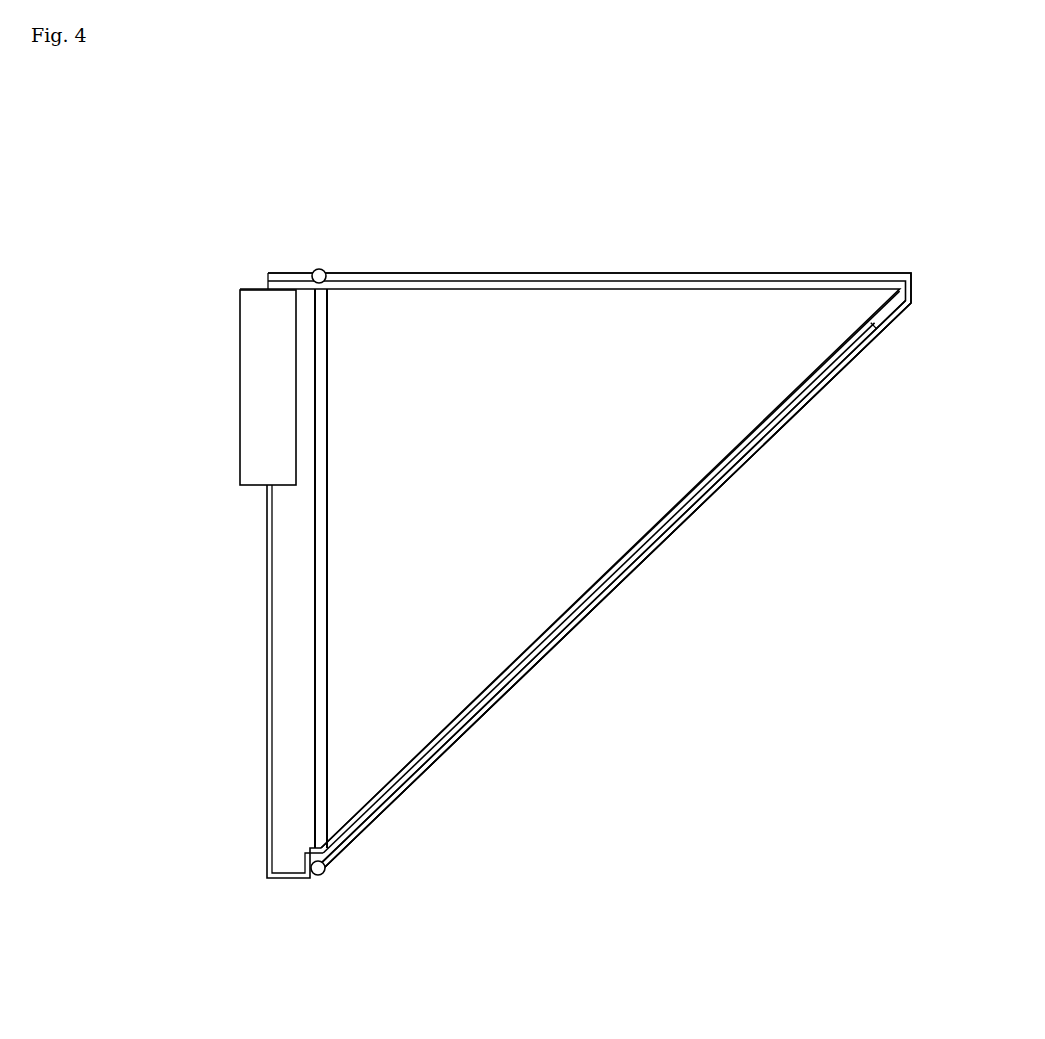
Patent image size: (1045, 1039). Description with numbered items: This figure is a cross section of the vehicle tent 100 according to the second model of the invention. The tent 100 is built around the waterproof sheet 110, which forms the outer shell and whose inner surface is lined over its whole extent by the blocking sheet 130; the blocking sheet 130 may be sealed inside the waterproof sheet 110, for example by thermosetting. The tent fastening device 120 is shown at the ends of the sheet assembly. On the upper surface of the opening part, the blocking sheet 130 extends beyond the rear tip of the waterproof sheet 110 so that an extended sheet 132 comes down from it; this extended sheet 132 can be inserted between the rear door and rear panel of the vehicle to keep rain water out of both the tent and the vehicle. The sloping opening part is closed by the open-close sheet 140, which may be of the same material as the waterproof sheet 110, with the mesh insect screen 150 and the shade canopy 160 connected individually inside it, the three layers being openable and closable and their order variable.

The vehicle tent 100 is at (230, 217).
The waterproof sheet 110 is at (488, 273).
The tent fastening device 120 is at (318, 269).
The blocking sheet 130 is at (615, 281).
The extended sheet 132 is at (240, 291).
The open-close sheet 140 is at (795, 413).
The insect screen 150 is at (733, 472).
The shade canopy 160 is at (682, 522).